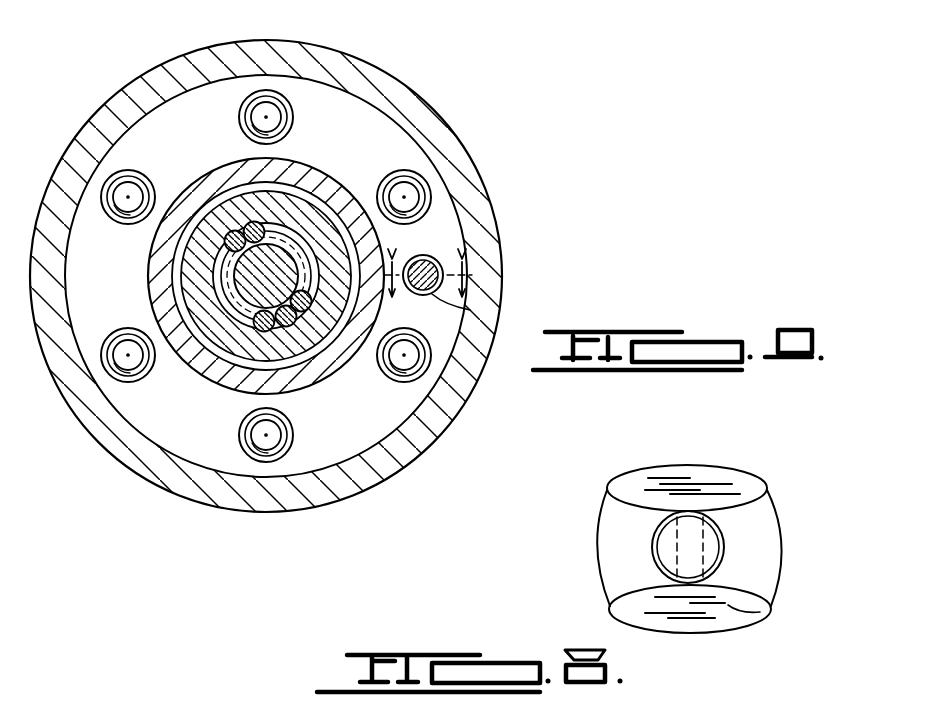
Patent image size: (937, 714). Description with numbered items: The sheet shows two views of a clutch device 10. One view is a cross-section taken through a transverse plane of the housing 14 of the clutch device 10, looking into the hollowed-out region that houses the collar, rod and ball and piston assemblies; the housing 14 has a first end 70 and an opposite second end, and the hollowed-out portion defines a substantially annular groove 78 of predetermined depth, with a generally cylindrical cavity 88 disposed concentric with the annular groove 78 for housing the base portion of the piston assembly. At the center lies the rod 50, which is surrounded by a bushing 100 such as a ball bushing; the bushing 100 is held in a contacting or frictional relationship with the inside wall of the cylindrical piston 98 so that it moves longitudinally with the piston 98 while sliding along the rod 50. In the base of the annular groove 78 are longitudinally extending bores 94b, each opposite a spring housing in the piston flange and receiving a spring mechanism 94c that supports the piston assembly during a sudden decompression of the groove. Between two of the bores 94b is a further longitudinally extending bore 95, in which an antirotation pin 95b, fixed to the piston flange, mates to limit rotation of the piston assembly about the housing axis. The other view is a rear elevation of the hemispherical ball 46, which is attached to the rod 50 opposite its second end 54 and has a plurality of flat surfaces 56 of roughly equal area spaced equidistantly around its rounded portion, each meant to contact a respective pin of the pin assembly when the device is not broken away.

In FIG. 9, the housing 14 is at (443, 110).
In FIG. 9, the annular groove 78 is at (357, 121).
In FIG. 9, the piston 98 is at (195, 272).
In FIG. 9, the bearing 88 is at (222, 352).
In FIG. 9, the rod 50 is at (287, 250).
In FIG. 9, the bushing 100 is at (233, 232).
In FIG. 9, the longitudinally extending bores 94b is at (259, 90).
In FIG. 9, the spring mechanism 94c is at (281, 92).
In FIG. 9, the longitudinally extending bore 95 is at (423, 254).
In FIG. 9, the first end 70 is at (460, 279).
In FIG. 9, the antirotation pin 95b is at (470, 310).
In FIG. 9, the clutch device 10 is at (427, 287).
In FIG. 8, the hemispherical ball 46 is at (771, 532).
In FIG. 8, the second end 54 is at (663, 546).
In FIG. 8, the flat surfaces 56 is at (760, 612).